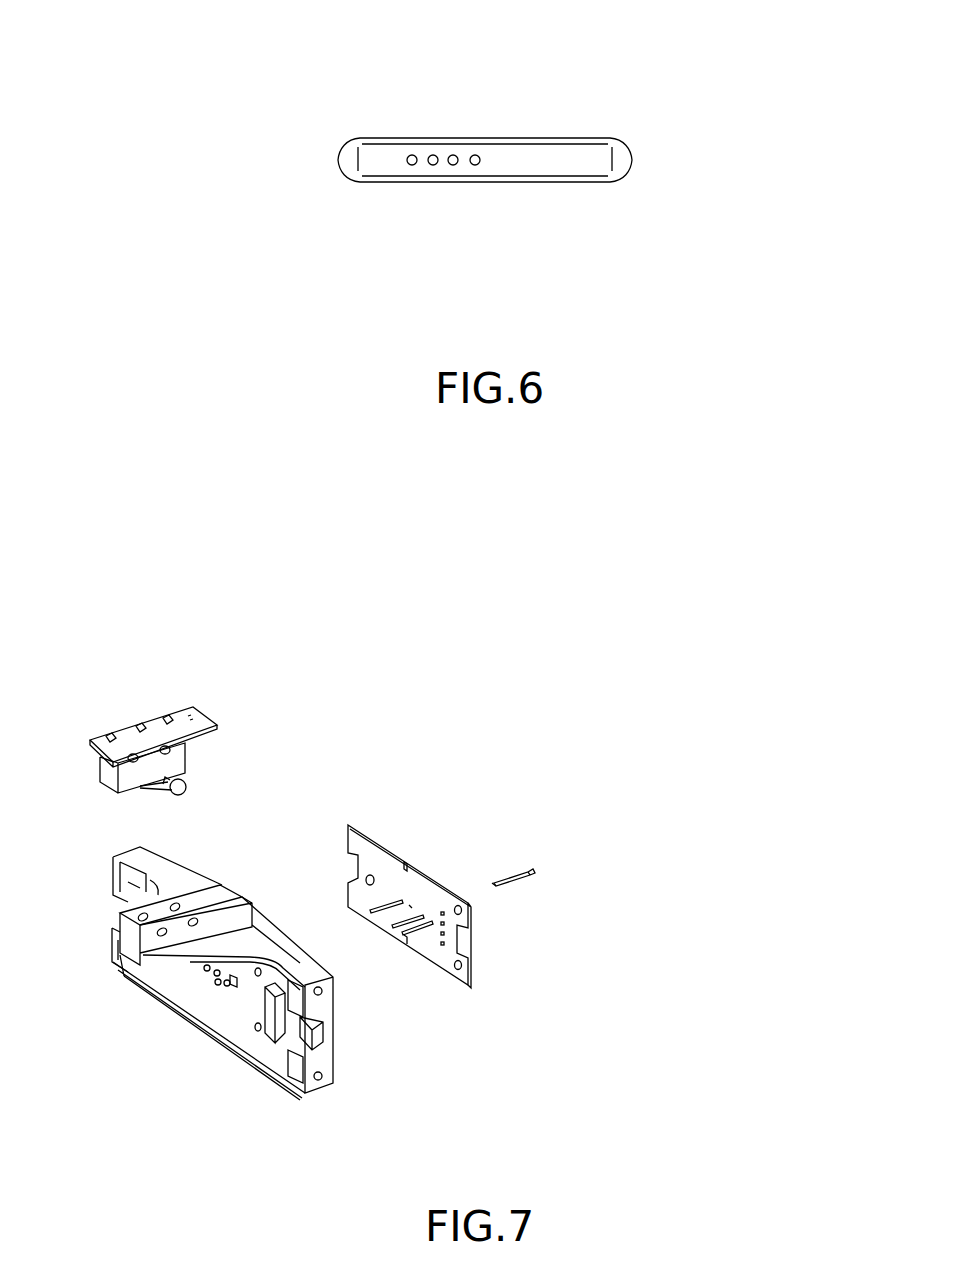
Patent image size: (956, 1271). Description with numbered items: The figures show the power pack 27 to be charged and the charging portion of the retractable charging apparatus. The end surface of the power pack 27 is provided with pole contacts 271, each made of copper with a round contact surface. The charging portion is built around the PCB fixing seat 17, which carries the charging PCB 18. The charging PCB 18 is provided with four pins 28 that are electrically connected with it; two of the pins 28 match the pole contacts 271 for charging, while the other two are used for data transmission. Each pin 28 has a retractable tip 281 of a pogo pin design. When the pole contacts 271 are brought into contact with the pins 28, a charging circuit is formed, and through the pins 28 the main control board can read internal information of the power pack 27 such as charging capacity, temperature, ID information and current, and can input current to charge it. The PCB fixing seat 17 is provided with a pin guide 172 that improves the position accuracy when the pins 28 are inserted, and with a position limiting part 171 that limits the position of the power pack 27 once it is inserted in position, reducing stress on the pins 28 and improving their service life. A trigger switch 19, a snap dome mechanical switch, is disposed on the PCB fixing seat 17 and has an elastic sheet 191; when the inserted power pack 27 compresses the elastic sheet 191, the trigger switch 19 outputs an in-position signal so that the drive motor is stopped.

In FIG. 6, the power pack 27 is at (362, 178).
In FIG. 6, the pole contacts 271 is at (412, 158).
In FIG. 7, the trigger switch 19 is at (102, 732).
In FIG. 7, the elastic sheet 191 is at (192, 777).
In FIG. 7, the charging PCB 18 is at (348, 826).
In FIG. 7, the pins 28 is at (500, 880).
In FIG. 7, the tip 281 is at (492, 883).
In FIG. 7, the PCB fixing seat 17 is at (333, 1085).
In FIG. 7, the position limiting part 171 is at (270, 1042).
In FIG. 7, the pin guide 172 is at (213, 982).